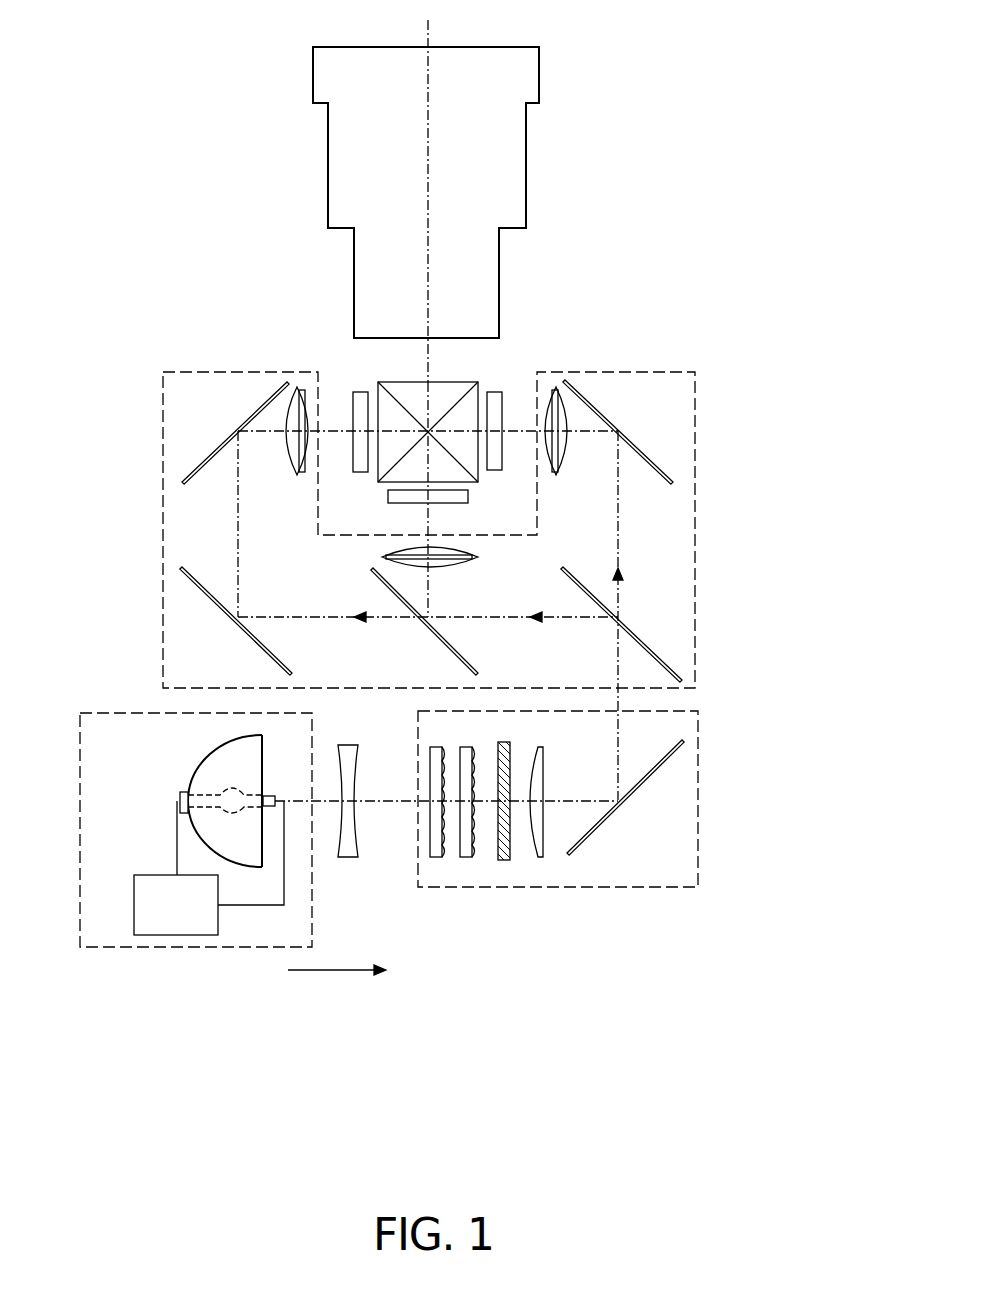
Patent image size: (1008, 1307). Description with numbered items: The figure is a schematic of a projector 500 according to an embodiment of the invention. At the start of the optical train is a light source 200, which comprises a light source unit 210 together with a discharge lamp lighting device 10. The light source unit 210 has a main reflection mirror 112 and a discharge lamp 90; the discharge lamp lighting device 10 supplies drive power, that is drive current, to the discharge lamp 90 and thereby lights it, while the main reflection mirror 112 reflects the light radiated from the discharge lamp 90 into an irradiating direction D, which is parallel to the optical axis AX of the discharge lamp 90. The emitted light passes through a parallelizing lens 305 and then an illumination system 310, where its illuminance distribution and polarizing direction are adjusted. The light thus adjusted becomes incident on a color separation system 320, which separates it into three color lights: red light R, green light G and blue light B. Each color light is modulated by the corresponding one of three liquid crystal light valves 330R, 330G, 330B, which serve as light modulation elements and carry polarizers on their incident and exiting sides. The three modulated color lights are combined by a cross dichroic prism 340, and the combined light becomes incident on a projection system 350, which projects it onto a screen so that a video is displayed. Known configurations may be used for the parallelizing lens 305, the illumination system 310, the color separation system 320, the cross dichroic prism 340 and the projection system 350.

The projector 500 is at (608, 30).
The projection system 350 is at (527, 195).
The cross dichroic prism 340 is at (417, 382).
The liquid crystal light valve 330R is at (491, 392).
The liquid crystal light valve 330G is at (452, 503).
The liquid crystal light valve 330B is at (360, 472).
The color separation system 320 is at (698, 662).
The illumination system 310 is at (700, 850).
The parallelizing lens 305 is at (350, 860).
The light source 200 is at (165, 950).
The light source unit 210 is at (194, 797).
The main reflection mirror 112 is at (200, 770).
The discharge lamp 90 is at (268, 795).
The discharge lamp lighting device 10 is at (134, 910).
The optical axis AX is at (400, 805).
The irradiating direction D is at (347, 971).
The blue light B is at (238, 548).
The green light G is at (430, 577).
The red light R is at (618, 540).